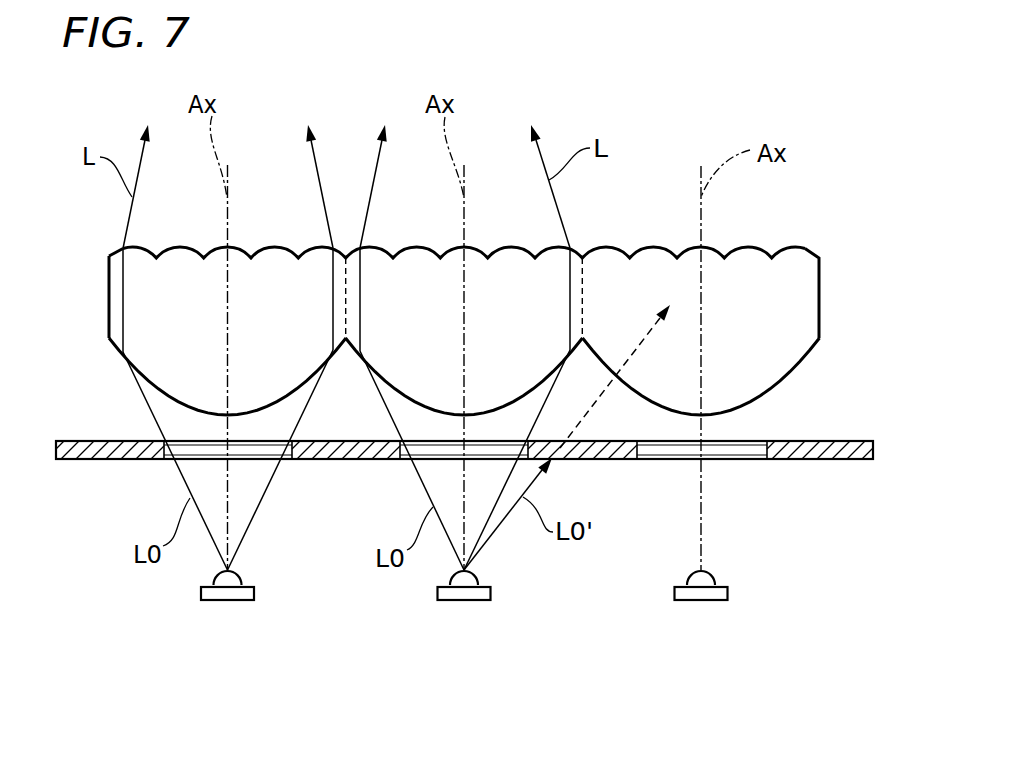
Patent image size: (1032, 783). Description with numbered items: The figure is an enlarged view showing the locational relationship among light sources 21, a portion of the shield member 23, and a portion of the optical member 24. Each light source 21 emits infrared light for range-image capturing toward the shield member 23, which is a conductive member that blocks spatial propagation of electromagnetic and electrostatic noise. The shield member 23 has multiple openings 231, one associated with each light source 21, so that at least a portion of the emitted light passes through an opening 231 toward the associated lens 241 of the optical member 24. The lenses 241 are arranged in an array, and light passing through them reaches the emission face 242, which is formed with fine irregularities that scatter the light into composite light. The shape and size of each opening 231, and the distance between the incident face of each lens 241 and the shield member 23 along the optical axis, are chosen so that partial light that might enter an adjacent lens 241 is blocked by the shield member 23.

The light source 21 is at (232, 601).
The shield member 23 is at (459, 500).
The opening 231 is at (276, 451).
The optical member 24 is at (481, 306).
The lens 241 is at (148, 380).
The emission face 242 is at (803, 247).